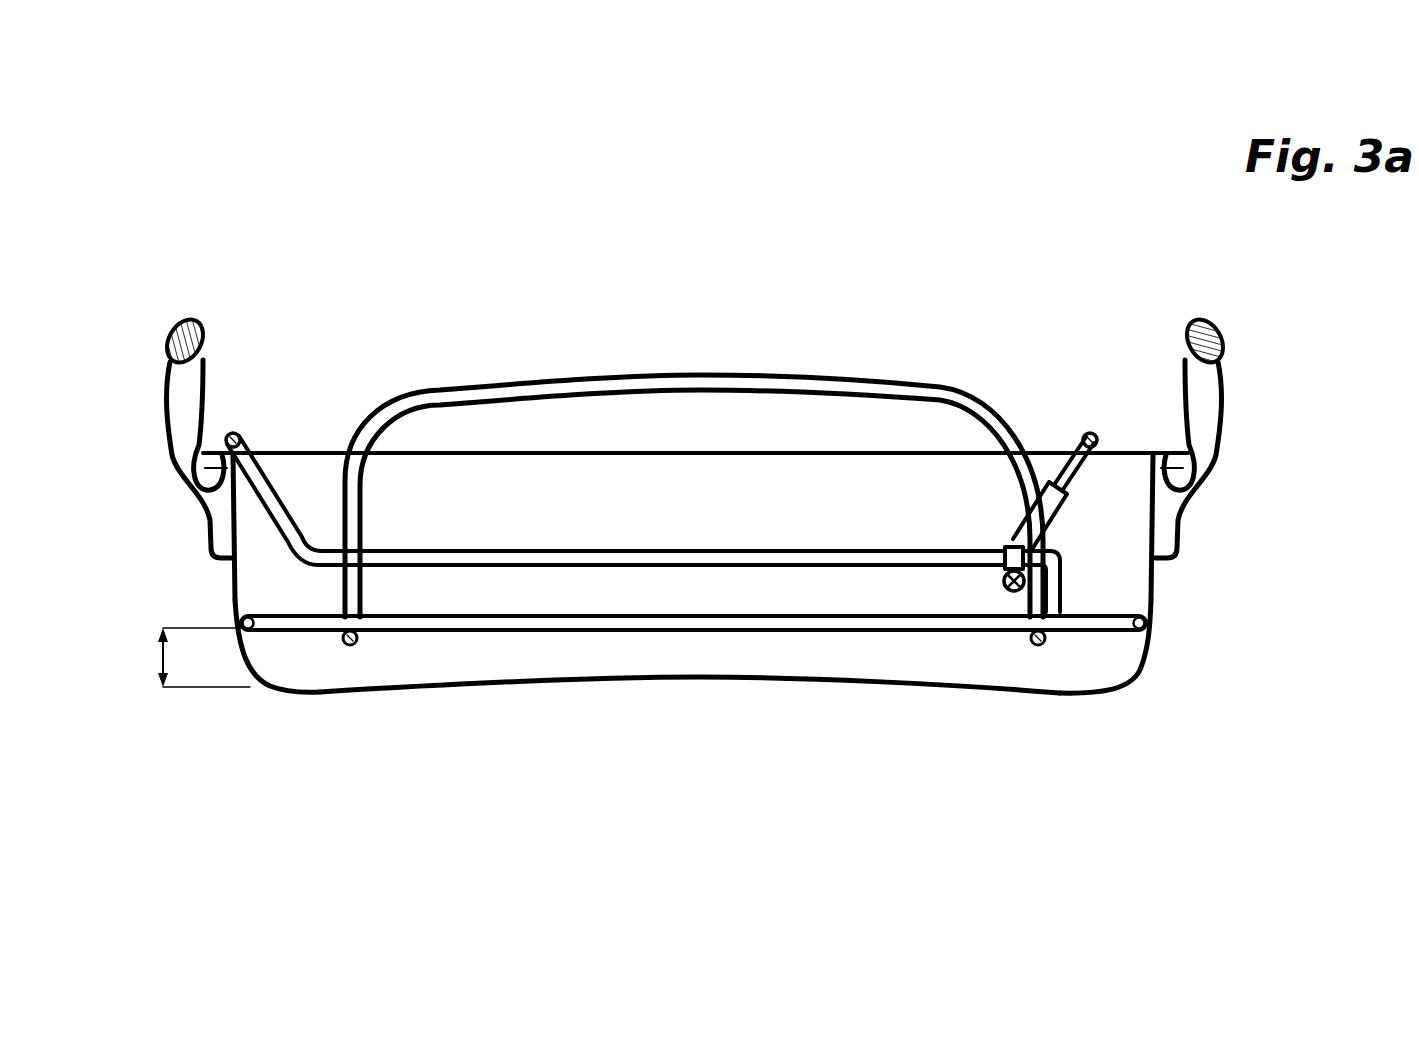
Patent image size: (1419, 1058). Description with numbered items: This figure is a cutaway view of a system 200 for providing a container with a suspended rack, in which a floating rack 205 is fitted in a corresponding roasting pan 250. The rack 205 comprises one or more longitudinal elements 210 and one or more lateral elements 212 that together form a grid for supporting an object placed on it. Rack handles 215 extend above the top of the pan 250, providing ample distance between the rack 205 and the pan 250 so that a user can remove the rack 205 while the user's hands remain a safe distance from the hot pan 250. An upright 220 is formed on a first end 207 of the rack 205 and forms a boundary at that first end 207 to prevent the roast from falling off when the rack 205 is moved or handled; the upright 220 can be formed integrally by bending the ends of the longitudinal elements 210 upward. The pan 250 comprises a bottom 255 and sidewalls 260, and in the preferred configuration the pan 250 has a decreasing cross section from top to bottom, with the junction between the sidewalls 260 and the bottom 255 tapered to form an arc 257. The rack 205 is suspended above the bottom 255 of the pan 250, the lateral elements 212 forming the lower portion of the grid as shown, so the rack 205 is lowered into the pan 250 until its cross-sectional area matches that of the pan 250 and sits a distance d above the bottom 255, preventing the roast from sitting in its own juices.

The system 200 is at (237, 155).
The rack 205 is at (708, 360).
The rack handles 215 is at (604, 375).
The upright 220 is at (283, 503).
The roasting pan 250 is at (917, 714).
The bottom 255 is at (733, 680).
The arc 257 is at (240, 667).
The sidewalls 260 is at (230, 574).
The first end 207 is at (238, 627).
The longitudinal elements 210 is at (565, 635).
The lateral elements 212 is at (360, 640).